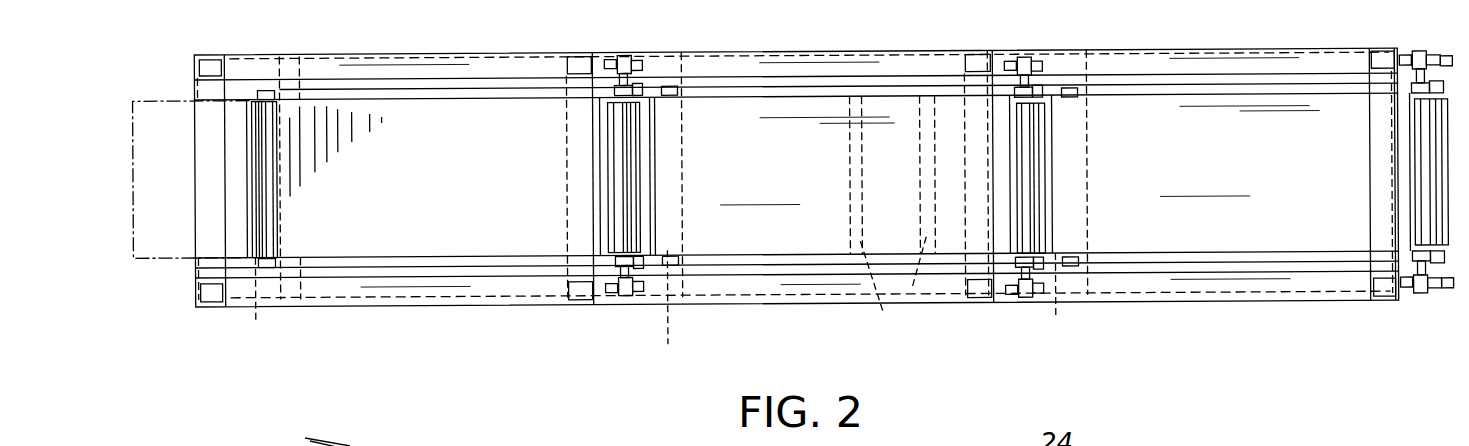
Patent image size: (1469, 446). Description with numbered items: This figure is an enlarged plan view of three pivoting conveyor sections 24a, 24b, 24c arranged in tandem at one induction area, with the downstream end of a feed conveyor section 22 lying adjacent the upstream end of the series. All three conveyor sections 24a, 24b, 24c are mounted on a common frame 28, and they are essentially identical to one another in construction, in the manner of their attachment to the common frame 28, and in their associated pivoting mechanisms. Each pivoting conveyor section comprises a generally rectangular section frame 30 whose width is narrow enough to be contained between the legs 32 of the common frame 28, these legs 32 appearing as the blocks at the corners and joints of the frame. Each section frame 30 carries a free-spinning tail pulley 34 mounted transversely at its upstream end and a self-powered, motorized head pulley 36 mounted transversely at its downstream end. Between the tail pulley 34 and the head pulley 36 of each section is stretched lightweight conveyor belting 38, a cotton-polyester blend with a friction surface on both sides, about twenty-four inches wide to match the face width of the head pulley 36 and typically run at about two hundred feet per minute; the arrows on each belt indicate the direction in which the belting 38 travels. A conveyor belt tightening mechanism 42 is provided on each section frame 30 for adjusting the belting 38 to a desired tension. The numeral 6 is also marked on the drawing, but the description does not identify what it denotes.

The actuator unit 6 is at (603, 262).
The feed conveyor section 22 is at (178, 252).
The pivoting conveyor section 24a is at (480, 240).
The pivoting conveyor section 24b is at (828, 238).
The pivoting conveyor section 24c is at (1218, 240).
The common frame 28 is at (418, 309).
The section frame 30 is at (342, 270).
The legs 32 is at (211, 56).
The tail pulley 34 is at (669, 313).
The head pulley 36 is at (632, 240).
The conveyor belting 38 is at (470, 180).
The conveyor belt tightening mechanism 42 is at (925, 265).